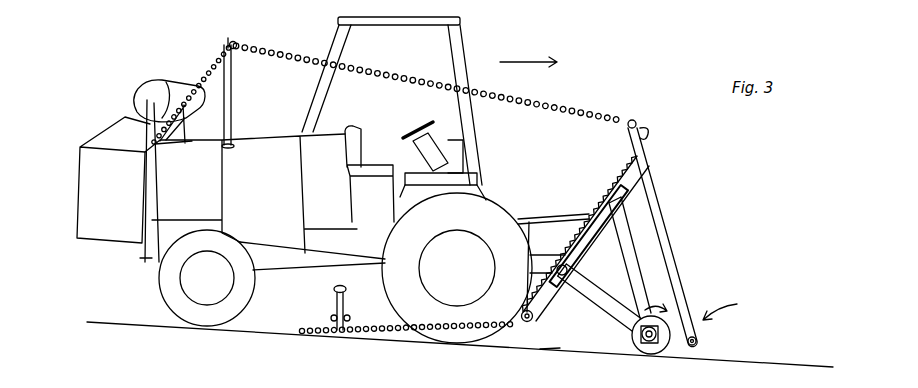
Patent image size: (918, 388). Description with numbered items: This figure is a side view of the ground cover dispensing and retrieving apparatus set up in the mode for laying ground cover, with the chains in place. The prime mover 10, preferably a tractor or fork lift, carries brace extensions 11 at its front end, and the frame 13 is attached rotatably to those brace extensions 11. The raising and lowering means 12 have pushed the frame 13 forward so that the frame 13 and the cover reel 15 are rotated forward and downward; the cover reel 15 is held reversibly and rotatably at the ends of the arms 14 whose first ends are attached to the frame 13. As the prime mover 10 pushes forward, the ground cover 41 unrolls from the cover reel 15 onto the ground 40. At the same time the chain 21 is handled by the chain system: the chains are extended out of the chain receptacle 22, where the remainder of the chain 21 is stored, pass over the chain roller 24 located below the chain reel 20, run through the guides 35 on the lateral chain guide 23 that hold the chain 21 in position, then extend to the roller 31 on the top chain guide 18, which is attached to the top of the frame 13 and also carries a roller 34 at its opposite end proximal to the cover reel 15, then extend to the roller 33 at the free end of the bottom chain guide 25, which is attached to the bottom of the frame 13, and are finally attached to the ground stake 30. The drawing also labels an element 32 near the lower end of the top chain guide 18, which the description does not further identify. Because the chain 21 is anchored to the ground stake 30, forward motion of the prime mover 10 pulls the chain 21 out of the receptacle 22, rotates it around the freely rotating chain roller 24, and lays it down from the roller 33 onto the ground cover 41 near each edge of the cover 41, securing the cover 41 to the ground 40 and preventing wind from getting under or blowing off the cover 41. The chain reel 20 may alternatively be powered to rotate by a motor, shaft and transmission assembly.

The prime mover 10 is at (472, 36).
The brace extensions 11 is at (541, 263).
The raising and lowering means 12 is at (536, 218).
The frame 13 is at (585, 236).
The arms 14 is at (596, 302).
The cover reel 15 is at (644, 349).
The top chain guide 18 is at (662, 203).
The chain reel 20 is at (148, 100).
The chain 21 is at (203, 73).
The chain receptacle 22 is at (101, 133).
The lateral chain guide 23 is at (233, 97).
The chain roller 24 is at (183, 133).
The bottom chain guide 25 is at (556, 283).
The ground stake 30 is at (331, 298).
The roller 31 is at (637, 121).
The lower pivot pin 32 is at (698, 339).
The roller 33 is at (524, 311).
The roller 34 is at (731, 304).
The guides 35 is at (236, 38).
The ground 40 is at (773, 358).
The ground cover 41 is at (542, 348).